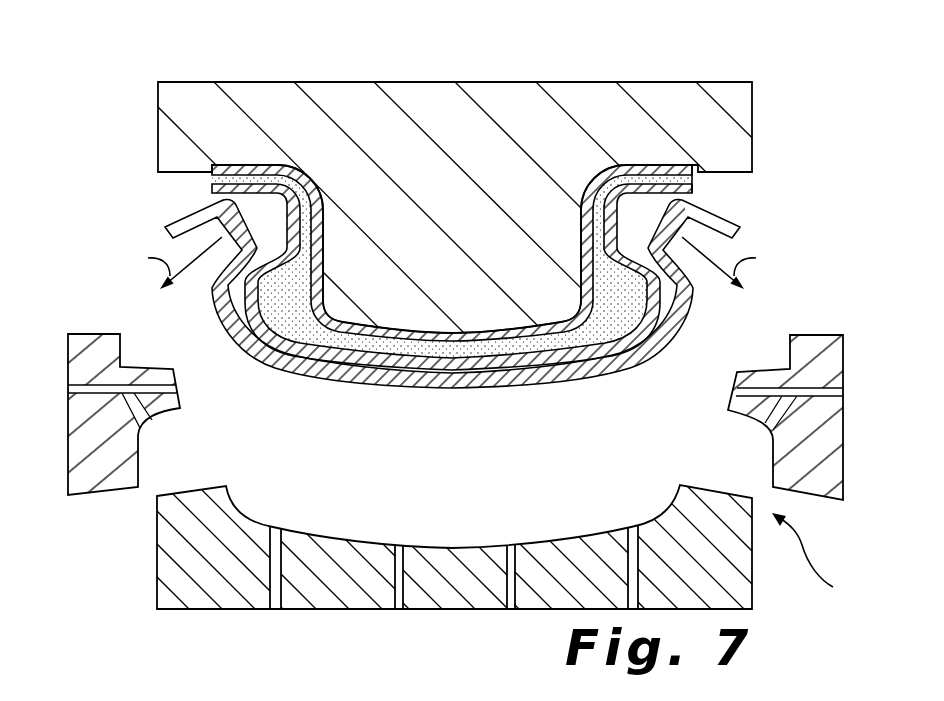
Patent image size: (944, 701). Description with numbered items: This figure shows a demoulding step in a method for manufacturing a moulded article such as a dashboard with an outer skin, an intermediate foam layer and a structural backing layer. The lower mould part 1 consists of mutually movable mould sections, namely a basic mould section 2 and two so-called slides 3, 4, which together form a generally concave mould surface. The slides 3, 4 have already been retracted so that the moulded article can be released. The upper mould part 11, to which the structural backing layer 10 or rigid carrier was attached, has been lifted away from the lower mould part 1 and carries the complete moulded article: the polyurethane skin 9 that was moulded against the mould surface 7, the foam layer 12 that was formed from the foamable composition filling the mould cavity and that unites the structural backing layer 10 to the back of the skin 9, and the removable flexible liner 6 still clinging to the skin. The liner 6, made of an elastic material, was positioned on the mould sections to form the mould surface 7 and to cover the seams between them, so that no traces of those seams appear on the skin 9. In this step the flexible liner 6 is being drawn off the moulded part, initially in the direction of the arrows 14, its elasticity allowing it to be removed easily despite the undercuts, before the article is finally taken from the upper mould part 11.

The lower mould part 1 is at (815, 557).
The basic mould section 2 is at (432, 587).
The slide 3 is at (75, 423).
The slide 4 is at (830, 418).
The flexible liner 6 is at (682, 325).
The mould surface 7 is at (696, 196).
The skin 9 is at (660, 342).
The structural backing layer 10 is at (566, 337).
The upper mould part 11 is at (512, 102).
The foam layer 12 is at (607, 317).
The arrows 14 is at (453, 263).